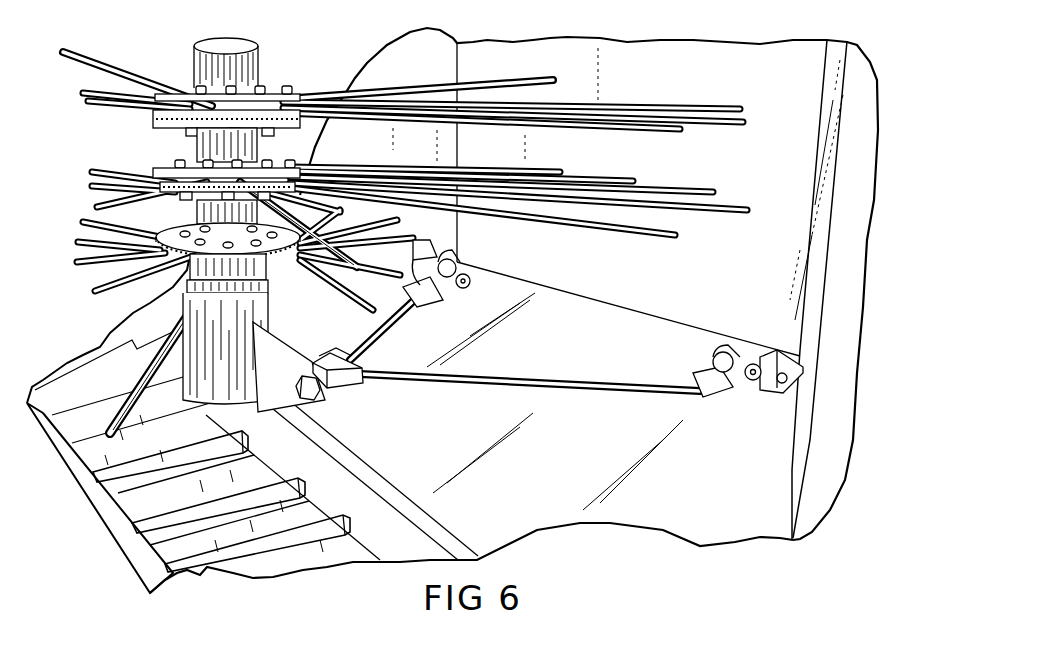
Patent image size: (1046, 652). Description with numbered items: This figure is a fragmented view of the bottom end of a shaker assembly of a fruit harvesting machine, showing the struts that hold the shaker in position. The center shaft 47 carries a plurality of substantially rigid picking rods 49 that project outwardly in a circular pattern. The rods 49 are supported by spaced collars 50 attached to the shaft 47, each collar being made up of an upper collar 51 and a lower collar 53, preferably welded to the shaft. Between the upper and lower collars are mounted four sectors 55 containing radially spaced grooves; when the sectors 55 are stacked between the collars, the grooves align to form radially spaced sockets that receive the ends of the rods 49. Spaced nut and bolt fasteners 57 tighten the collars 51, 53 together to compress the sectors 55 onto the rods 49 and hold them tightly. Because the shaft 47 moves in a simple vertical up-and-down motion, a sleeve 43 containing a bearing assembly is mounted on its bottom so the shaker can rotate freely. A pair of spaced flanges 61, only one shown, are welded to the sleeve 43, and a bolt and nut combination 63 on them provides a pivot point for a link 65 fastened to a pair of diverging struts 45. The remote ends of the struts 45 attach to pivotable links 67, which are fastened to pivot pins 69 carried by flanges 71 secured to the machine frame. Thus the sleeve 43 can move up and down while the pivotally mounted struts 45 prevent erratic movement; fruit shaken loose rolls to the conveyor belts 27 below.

The conveyor belts 27 is at (200, 501).
The sleeve 43 is at (268, 307).
The struts 45 is at (397, 316).
The shaft 47 is at (193, 58).
The rods 49 is at (401, 98).
The collars 50 is at (300, 93).
The upper collar 51 is at (277, 93).
The lower collar 53 is at (153, 118).
The sectors 55 is at (190, 128).
The nut and bolt fasteners 57 is at (232, 97).
The flanges 61 is at (287, 362).
The bolt and nut combination 63 is at (313, 397).
The link 65 is at (357, 378).
The pivotable links 67 is at (455, 262).
The pivot pins 69 is at (469, 285).
The flanges 71 is at (426, 244).